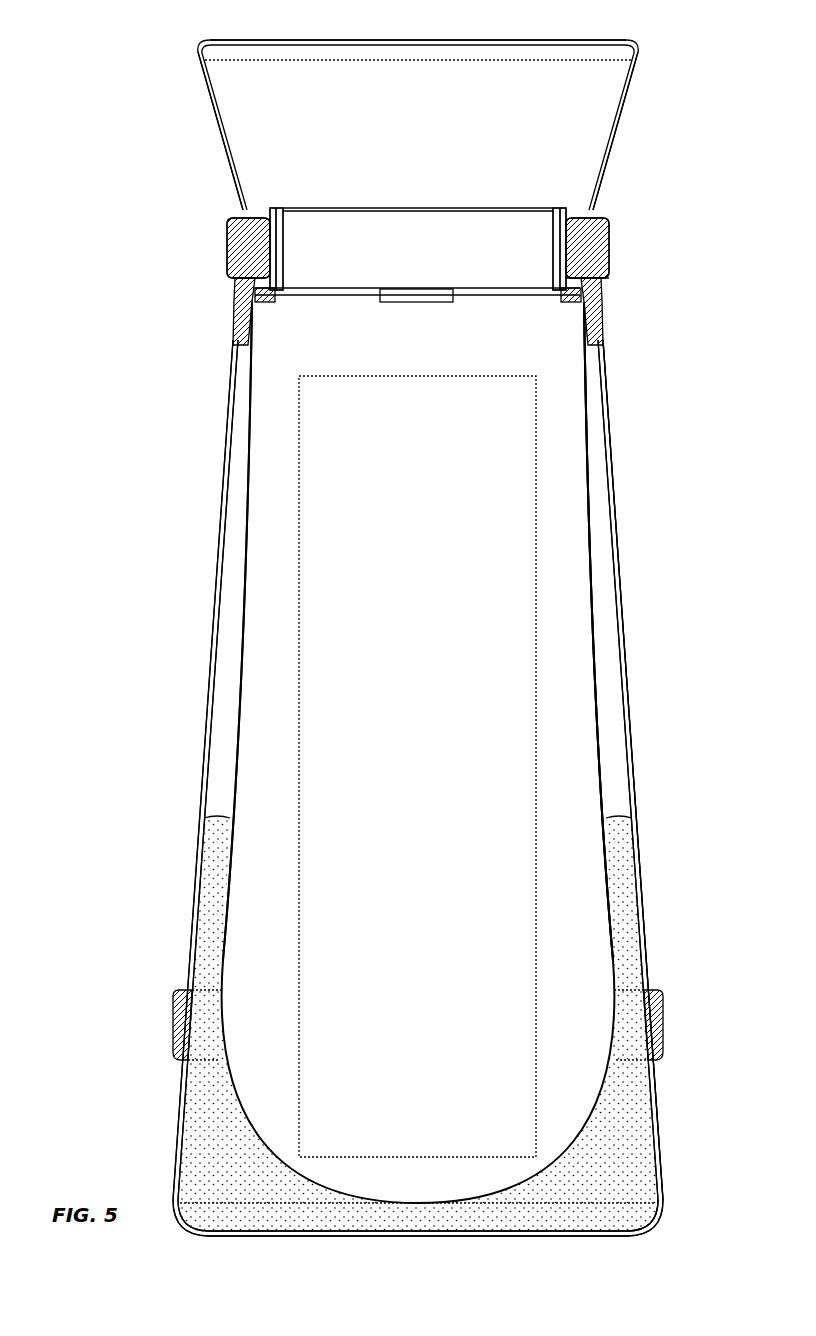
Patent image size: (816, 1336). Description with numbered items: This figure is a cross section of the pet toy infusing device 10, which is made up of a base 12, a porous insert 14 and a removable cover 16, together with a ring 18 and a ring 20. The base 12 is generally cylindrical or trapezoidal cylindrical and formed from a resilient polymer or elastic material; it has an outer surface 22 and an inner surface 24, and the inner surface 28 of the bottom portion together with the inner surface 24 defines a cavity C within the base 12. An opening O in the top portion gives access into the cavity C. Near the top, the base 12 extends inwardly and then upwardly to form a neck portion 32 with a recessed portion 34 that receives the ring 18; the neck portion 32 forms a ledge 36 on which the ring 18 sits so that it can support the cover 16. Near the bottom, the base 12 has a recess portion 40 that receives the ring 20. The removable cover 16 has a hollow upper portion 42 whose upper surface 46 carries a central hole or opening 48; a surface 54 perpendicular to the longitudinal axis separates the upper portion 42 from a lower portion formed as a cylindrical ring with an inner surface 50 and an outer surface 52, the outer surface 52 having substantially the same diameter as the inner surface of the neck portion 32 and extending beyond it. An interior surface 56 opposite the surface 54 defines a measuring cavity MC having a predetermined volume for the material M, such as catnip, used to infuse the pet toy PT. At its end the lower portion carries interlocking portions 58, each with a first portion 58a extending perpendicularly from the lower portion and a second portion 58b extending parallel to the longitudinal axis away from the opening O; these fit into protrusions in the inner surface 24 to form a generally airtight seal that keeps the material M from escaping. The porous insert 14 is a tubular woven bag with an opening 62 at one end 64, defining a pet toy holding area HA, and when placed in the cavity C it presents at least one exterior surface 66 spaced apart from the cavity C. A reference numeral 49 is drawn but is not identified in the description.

The pet toy infusing device 10 is at (663, 472).
The base 12 is at (622, 620).
The porous insert 14 is at (593, 682).
The removable cover 16 is at (622, 123).
The ring 18 is at (608, 255).
The ring 20 is at (662, 1023).
The outer surface 22 is at (615, 527).
The inner surface 24 is at (609, 551).
The inner surface of the bottom portion 28 is at (625, 1233).
The neck portion 32 is at (268, 230).
The recessed portion 34 is at (268, 262).
The ledge 36 is at (236, 273).
The recess portion 40 is at (190, 1032).
The upper portion 42 is at (220, 137).
The upper surface 46 is at (570, 40).
The opening 48 is at (418, 40).
The right channel inner rail 49 is at (558, 262).
The inner surface 50 is at (275, 215).
The outer surface 52 is at (278, 268).
The surface 54 is at (592, 223).
The interior surface 56 is at (577, 217).
The interlocking portions 58 is at (265, 302).
The first portion 58a is at (587, 285).
The second portion 58b is at (583, 290).
The opening 62 is at (558, 232).
The end 64 is at (273, 240).
The exterior surface 66 is at (585, 450).
The measuring cavity MC is at (277, 78).
The opening O is at (510, 220).
The pet toy PT is at (535, 733).
The cavity C is at (618, 807).
The pet toy holding area HA is at (568, 875).
The material M is at (630, 933).